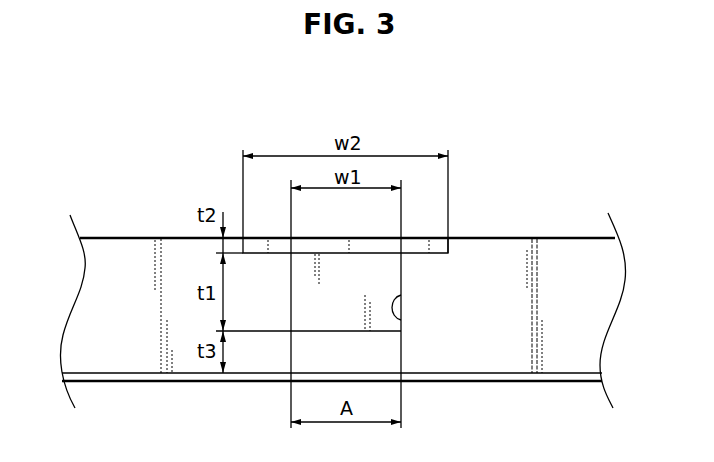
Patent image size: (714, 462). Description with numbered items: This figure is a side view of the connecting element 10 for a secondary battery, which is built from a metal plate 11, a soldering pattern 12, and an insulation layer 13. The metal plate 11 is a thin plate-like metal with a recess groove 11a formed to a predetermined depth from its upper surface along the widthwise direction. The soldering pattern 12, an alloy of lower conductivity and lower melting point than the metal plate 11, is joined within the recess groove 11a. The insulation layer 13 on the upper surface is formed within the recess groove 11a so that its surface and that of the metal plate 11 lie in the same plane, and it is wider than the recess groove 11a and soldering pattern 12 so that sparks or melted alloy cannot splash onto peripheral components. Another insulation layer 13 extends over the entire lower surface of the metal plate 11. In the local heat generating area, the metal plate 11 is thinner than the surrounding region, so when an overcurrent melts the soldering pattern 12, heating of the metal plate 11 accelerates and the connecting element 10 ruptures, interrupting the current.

The connecting element for the secondary battery 10 is at (501, 123).
The metal plate 11 is at (564, 243).
The recess groove 11a is at (401, 320).
The soldering pattern 12 is at (371, 268).
The insulation layer 13 is at (424, 246).